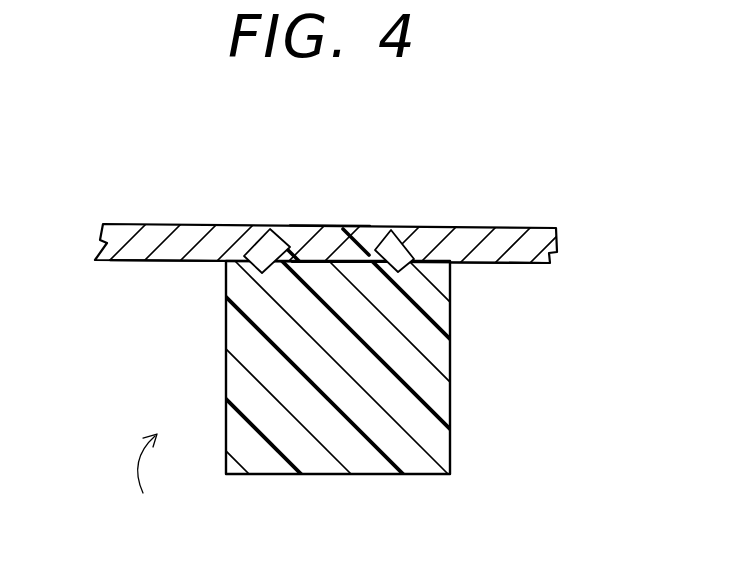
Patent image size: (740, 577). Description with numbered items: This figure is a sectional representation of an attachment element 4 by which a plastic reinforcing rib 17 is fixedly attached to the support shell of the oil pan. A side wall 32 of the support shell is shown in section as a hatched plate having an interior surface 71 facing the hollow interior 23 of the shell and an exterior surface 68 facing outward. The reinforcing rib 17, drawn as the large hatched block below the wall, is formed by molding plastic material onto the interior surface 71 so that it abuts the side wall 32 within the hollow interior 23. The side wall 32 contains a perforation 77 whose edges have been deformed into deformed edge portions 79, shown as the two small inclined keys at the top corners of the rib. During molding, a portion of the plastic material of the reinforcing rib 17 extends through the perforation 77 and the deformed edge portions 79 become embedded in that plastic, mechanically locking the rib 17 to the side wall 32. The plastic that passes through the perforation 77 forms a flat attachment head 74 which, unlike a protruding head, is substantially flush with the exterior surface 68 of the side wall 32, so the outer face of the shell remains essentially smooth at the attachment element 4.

The attachment element 4 is at (155, 477).
The reinforcing rib 17 is at (427, 368).
The hollow interior 23 is at (142, 393).
The side wall 32 is at (168, 225).
The exterior surface 68 is at (225, 225).
The interior surface 71 is at (172, 262).
The flat attachment head 74 is at (330, 226).
The perforation 77 is at (312, 250).
The deformed edge portions 79 is at (278, 262).